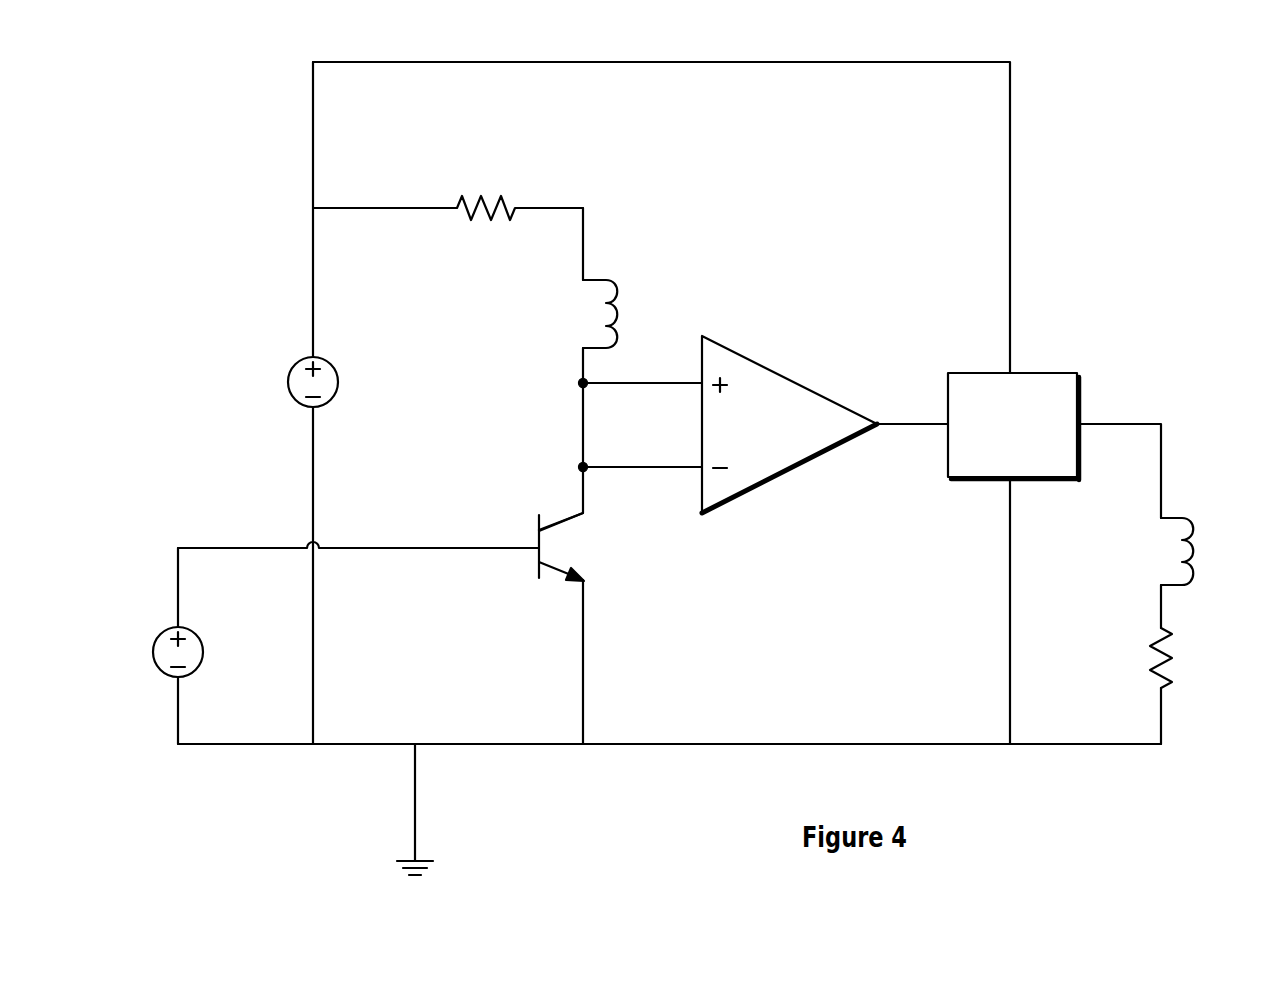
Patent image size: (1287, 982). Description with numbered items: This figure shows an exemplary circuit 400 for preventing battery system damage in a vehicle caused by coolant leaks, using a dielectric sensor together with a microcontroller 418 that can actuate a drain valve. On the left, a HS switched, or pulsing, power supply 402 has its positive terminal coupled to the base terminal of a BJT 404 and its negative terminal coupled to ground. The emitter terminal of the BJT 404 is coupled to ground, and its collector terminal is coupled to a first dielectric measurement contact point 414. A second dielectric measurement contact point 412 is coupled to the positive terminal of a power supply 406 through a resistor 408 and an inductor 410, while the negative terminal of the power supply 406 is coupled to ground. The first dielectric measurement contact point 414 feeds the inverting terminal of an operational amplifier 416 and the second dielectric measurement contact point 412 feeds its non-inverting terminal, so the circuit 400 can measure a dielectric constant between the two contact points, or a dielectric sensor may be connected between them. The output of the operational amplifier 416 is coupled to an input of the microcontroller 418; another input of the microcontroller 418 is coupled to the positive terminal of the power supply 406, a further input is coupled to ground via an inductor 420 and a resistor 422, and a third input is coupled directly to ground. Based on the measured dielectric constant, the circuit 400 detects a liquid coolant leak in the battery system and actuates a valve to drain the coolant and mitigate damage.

The circuit 400 is at (227, 70).
The HS switched power supply 402 is at (153, 650).
The BJT 404 is at (560, 572).
The power supply 406 is at (288, 380).
The resistor 408 is at (485, 195).
The inductor 410 is at (614, 289).
The second dielectric measurement contact point 412 is at (581, 383).
The first dielectric measurement contact point 414 is at (581, 467).
The operational amplifier 416 is at (788, 375).
The microcontroller 418 is at (1013, 426).
The inductor 420 is at (1190, 543).
The resistor 422 is at (1174, 630).